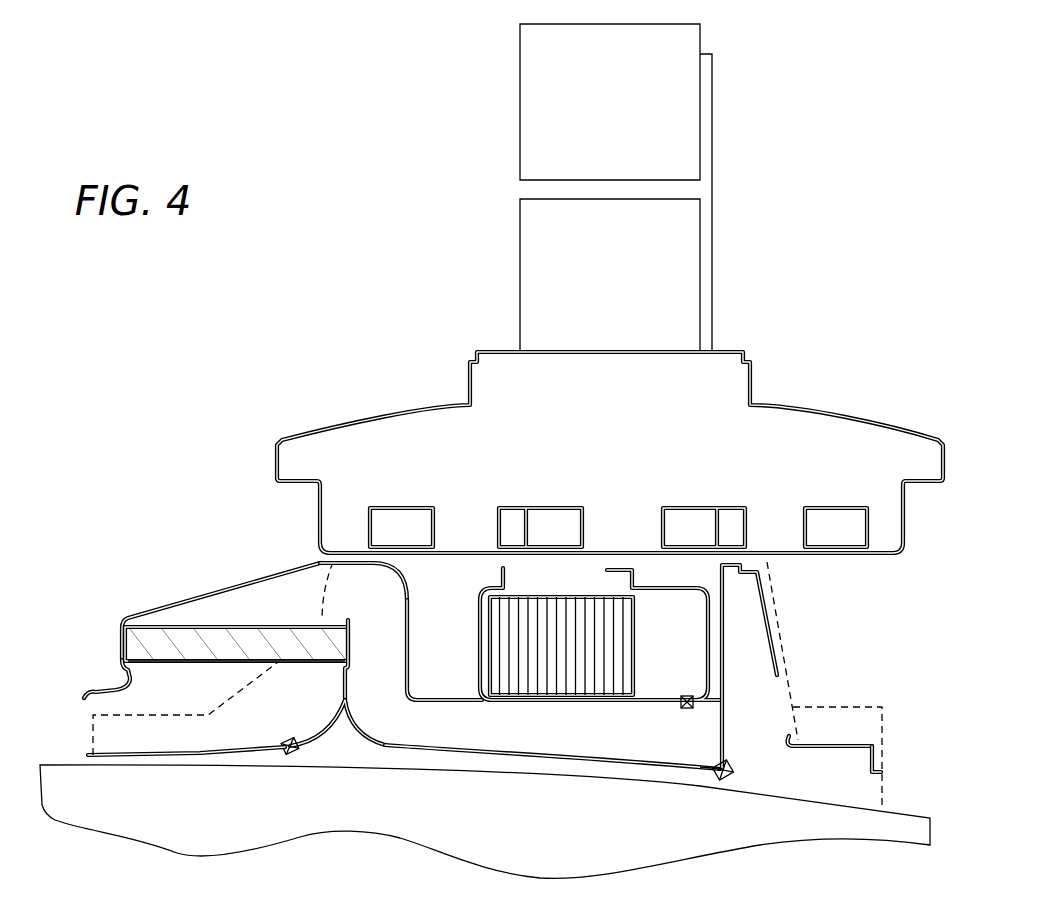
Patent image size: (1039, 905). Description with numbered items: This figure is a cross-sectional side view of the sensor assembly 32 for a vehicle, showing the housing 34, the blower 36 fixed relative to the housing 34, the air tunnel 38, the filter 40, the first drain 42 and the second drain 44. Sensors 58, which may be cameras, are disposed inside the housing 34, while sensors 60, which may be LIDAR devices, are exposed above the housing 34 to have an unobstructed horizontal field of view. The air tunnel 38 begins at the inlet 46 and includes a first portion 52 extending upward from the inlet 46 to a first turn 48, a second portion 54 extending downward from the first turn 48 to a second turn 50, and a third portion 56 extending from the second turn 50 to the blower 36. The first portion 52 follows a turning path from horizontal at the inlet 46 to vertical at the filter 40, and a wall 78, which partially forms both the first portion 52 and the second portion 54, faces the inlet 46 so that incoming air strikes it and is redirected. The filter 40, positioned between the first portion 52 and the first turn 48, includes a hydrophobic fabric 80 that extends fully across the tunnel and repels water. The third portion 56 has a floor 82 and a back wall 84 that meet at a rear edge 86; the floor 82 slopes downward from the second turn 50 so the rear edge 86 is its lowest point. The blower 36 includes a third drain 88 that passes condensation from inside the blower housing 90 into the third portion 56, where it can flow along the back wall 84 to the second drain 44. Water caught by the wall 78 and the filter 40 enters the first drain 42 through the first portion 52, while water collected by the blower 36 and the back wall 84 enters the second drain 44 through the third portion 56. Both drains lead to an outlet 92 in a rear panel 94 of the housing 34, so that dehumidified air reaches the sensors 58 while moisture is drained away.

The sensor assembly 32 is at (938, 215).
The housing 34 is at (848, 408).
The blower 36 is at (632, 628).
The air tunnel 38 is at (243, 582).
The filter 40 is at (213, 625).
The first drain 42 is at (290, 752).
The second drain 44 is at (730, 780).
The inlet 46 is at (88, 690).
The first turn 48 is at (398, 571).
The second turn 50 is at (368, 750).
The first portion 52 is at (190, 760).
The second portion 54 is at (410, 637).
The third portion 56 is at (565, 775).
The sensors 58 is at (833, 507).
The sensors 60 is at (520, 217).
The wall 78 is at (340, 672).
The hydrophobic fabric 80 is at (180, 665).
The floor 82 is at (532, 748).
The back wall 84 is at (727, 724).
The rear edge 86 is at (720, 782).
The third drain 88 is at (685, 706).
The blower housing 90 is at (652, 585).
The outlet 92 is at (878, 773).
The rear panel 94 is at (872, 755).